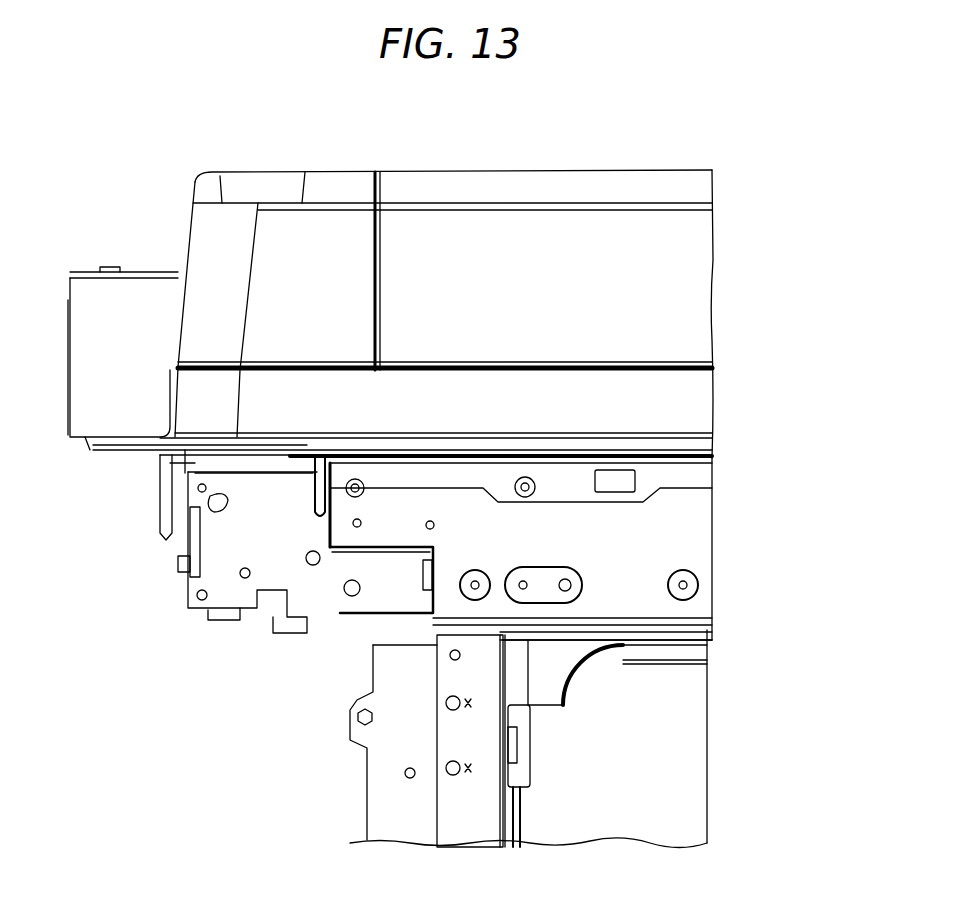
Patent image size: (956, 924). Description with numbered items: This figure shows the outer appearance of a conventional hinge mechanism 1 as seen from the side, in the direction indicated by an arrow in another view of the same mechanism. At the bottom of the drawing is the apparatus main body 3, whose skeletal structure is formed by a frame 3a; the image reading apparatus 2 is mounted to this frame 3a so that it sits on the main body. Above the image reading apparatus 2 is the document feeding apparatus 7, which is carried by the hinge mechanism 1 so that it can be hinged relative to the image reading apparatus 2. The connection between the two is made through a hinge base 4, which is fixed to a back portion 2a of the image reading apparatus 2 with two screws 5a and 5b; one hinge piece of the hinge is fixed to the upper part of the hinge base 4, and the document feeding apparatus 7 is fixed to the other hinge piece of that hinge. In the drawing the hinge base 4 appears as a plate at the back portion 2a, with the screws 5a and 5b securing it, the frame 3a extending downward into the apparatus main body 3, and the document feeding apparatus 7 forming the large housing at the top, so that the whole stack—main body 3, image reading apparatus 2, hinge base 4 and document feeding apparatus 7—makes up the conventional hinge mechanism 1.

The hinge mechanism 1 is at (145, 609).
The image reading apparatus 2 is at (728, 572).
The back portion 2a is at (334, 553).
The apparatus main body 3 is at (720, 819).
The frame 3a is at (465, 816).
The hinge base 4 is at (278, 546).
The screw 5a is at (413, 575).
The screw 5b is at (203, 485).
The document feeding apparatus 7 is at (738, 337).